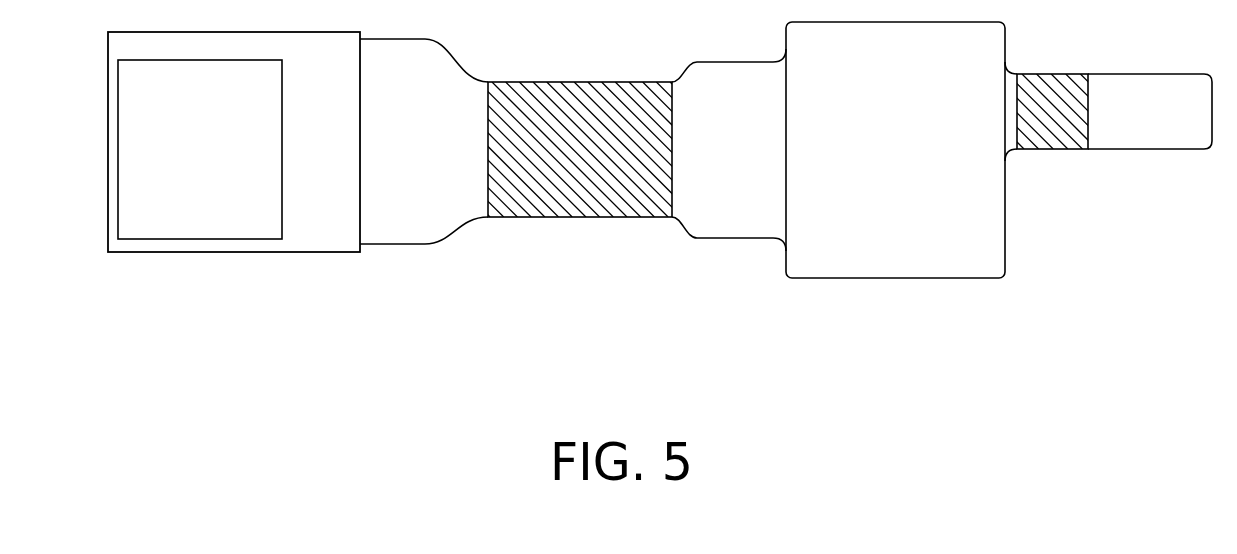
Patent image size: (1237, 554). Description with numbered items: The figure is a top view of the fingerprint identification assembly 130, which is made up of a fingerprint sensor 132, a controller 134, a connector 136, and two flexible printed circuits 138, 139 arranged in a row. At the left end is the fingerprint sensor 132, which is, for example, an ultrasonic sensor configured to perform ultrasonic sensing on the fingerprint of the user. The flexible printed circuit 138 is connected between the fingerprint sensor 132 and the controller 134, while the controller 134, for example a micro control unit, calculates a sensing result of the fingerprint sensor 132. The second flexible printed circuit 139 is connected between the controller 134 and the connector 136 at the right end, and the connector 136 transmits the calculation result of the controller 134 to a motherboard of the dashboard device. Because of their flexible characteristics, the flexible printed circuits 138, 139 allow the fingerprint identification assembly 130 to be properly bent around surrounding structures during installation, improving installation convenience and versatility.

The fingerprint identification assembly 130 is at (1229, 385).
The fingerprint sensor 132 is at (233, 202).
The controller 134 is at (890, 237).
The connector 136 is at (1152, 123).
The flexible printed circuit 138 is at (610, 180).
The flexible printed circuit 139 is at (1057, 117).